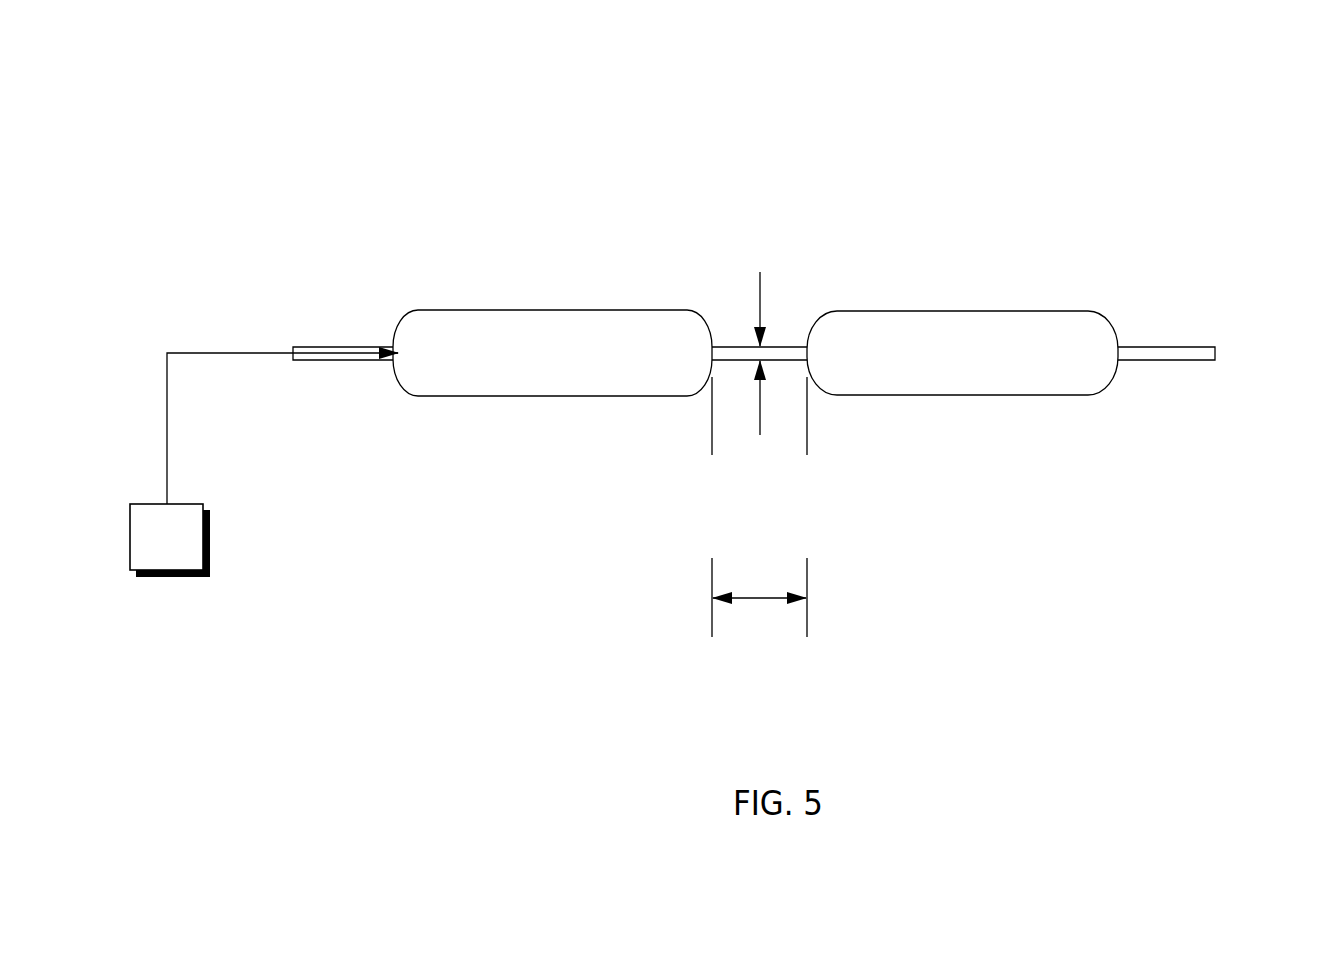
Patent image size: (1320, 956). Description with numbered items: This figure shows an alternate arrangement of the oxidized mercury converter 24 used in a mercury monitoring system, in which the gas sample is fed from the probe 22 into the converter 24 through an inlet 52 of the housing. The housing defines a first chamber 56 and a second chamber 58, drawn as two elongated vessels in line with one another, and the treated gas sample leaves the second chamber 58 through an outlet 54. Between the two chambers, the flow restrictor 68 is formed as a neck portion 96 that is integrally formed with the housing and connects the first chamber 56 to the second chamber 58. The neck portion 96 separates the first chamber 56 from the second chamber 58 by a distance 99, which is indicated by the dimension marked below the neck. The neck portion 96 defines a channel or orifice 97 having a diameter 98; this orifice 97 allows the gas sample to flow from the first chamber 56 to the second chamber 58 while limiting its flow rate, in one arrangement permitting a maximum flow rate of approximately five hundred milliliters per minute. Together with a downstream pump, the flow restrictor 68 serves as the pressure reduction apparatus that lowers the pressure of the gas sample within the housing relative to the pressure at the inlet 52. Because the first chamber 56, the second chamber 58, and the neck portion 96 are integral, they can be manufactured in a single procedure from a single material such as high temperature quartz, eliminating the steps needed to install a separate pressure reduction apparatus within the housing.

The probe 22 is at (170, 540).
The converter 24 is at (853, 139).
The inlet 52 is at (357, 360).
The outlet 54 is at (1200, 360).
The first chamber 56 is at (523, 396).
The second chamber 58 is at (1022, 395).
The flow restrictor 68 is at (733, 333).
The neck portion 96 is at (782, 398).
The orifice 97 is at (814, 355).
The diameter 98 is at (762, 288).
The distance 99 is at (760, 600).